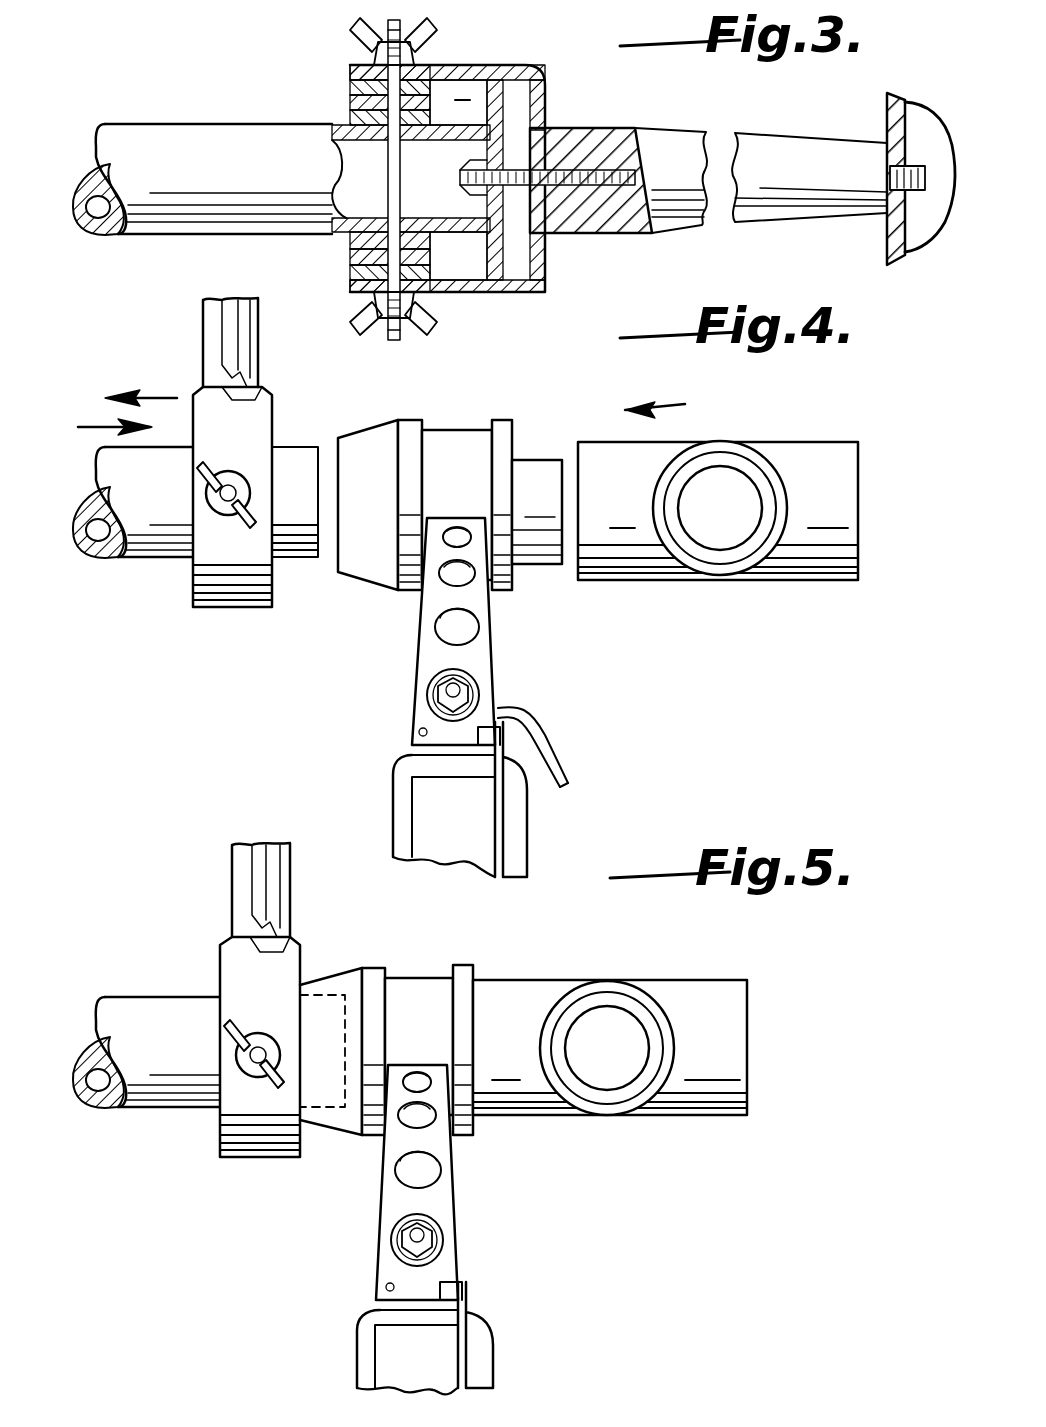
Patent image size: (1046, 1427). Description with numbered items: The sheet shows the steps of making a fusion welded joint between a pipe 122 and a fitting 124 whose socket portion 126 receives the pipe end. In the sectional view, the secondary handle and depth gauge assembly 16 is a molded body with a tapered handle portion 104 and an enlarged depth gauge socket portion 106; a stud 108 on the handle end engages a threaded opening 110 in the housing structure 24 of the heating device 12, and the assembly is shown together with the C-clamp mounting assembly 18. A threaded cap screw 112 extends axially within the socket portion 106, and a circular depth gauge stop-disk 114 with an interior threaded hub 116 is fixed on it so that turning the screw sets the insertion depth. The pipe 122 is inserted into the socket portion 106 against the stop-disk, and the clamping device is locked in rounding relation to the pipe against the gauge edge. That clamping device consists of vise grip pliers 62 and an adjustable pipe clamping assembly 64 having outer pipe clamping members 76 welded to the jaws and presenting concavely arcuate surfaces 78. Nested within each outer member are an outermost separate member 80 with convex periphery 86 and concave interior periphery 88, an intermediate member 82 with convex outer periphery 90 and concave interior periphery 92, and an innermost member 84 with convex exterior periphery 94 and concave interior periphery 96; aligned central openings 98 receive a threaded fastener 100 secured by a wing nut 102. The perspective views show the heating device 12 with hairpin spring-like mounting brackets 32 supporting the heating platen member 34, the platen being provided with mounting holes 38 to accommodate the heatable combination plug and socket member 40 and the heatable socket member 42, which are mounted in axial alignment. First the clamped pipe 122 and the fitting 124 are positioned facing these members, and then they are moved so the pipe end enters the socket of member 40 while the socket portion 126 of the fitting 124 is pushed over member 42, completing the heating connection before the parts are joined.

In FIG. 4, the heating device 12 is at (545, 807).
In FIG. 5, the heating device 12 is at (495, 1352).
In FIG. 3, the secondary handle and depth gauge assembly 16 is at (340, 50).
In FIG. 4, the secondary handle and depth gauge assembly 16 is at (195, 300).
In FIG. 3, the C-clamp mounting assembly 18 is at (648, 120).
In FIG. 4, the housing structure 24 is at (430, 808).
In FIG. 5, the housing structure 24 is at (392, 1350).
In FIG. 4, the hairpin spring-like mounting brackets 32 is at (487, 631).
In FIG. 5, the hairpin spring-like mounting brackets 32 is at (411, 1182).
In FIG. 4, the heating platen member 34 is at (448, 450).
In FIG. 5, the heating platen member 34 is at (418, 995).
In FIG. 4, the holes 38 is at (470, 630).
In FIG. 5, the holes 38 is at (395, 1172).
In FIG. 4, the heatable combination plug and socket member 40 is at (382, 572).
In FIG. 5, the heatable combination plug and socket member 40 is at (330, 990).
In FIG. 4, the heatable plug or socket member 42 is at (535, 470).
In FIG. 5, the heatable plug or socket member 42 is at (465, 978).
In FIG. 4, the vise grip pliers 62 is at (192, 347).
In FIG. 5, the vise grip pliers 62 is at (230, 890).
In FIG. 3, the adjustable pipe clamping assembly 64 is at (437, 185).
In FIG. 4, the adjustable pipe clamping assembly 64 is at (180, 566).
In FIG. 5, the adjustable pipe clamping assembly 64 is at (215, 1160).
In FIG. 3, the outer pipe clamping members 76 is at (350, 72).
In FIG. 4, the outer pipe clamping members 76 is at (240, 605).
In FIG. 5, the outer pipe clamping members 76 is at (268, 1160).
In FIG. 3, the concavely arcuate surfaces 78 is at (350, 88).
In FIG. 3, the outermost separate member 80 is at (480, 72).
In FIG. 3, the intermediate member 82 is at (350, 104).
In FIG. 3, the innermost separate member 84 is at (408, 140).
In FIG. 3, the outer convexly arcuate periphery 86 is at (428, 40).
In FIG. 3, the concavely arcuate interior periphery 88 is at (430, 250).
In FIG. 3, the convexly arcuate outer periphery 90 is at (458, 103).
In FIG. 3, the concavely arcuate interior periphery 92 is at (350, 244).
In FIG. 3, the convexly arcuate exterior periphery 94 is at (332, 128).
In FIG. 3, the concavely arcuate interior periphery 96 is at (340, 190).
In FIG. 3, the central opening 98 is at (440, 294).
In FIG. 3, the threaded fastener 100 is at (375, 45).
In FIG. 4, the threaded fastener 100 is at (232, 492).
In FIG. 5, the threaded fastener 100 is at (262, 1055).
In FIG. 3, the wing nut 102 is at (350, 22).
In FIG. 4, the wing nut 102 is at (205, 472).
In FIG. 5, the wing nut 102 is at (230, 1025).
In FIG. 3, the tapered handle portion 104 is at (645, 240).
In FIG. 3, the depth gauge socket portion 106 is at (545, 290).
In FIG. 3, the stud 108 is at (870, 220).
In FIG. 3, the threaded opening 110 is at (885, 138).
In FIG. 3, the threaded cap screw 112 is at (572, 205).
In FIG. 3, the depth gauge stop-disk 114 is at (520, 72).
In FIG. 3, the interior threaded hub 116 is at (512, 110).
In FIG. 3, the pipe 122 is at (205, 92).
In FIG. 4, the pipe 122 is at (105, 560).
In FIG. 5, the pipe 122 is at (148, 1005).
In FIG. 4, the fitting 124 is at (718, 512).
In FIG. 5, the fitting 124 is at (610, 1051).
In FIG. 4, the socket portion 126 is at (645, 560).
In FIG. 5, the socket portion 126 is at (505, 1092).